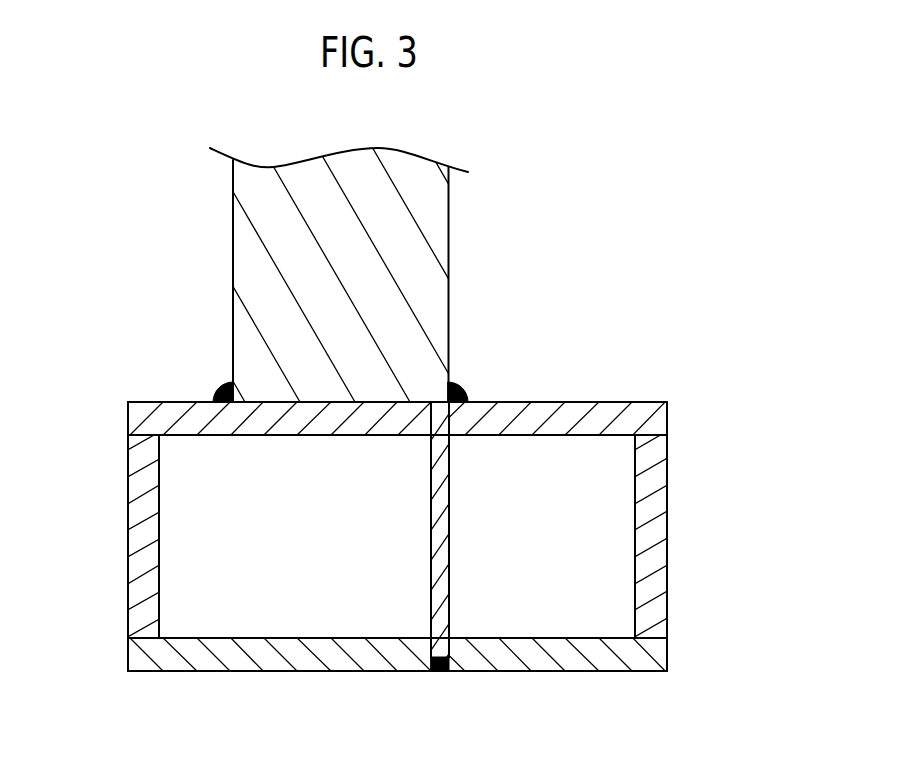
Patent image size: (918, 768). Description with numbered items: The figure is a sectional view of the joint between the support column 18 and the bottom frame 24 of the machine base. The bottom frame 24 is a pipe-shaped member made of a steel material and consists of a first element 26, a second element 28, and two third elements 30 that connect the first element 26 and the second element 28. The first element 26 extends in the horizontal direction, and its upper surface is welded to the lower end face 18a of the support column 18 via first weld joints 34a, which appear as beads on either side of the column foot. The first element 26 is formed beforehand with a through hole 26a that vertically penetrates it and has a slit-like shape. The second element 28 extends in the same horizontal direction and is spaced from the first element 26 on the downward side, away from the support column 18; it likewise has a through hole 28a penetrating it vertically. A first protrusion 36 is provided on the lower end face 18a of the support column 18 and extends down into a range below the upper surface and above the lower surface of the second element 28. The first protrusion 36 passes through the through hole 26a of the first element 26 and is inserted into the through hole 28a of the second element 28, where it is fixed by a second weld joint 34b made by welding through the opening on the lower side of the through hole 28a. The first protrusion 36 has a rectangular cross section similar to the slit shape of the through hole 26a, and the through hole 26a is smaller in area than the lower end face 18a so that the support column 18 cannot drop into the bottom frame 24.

The support column 18 is at (350, 164).
The lower end face of the support column 18a is at (309, 404).
The bottom frame 24 is at (731, 394).
The first element 26 is at (657, 422).
The through hole of the first element 26a is at (436, 406).
The second element 28 is at (656, 658).
The through hole of the second element 28a is at (431, 647).
The third element 30 is at (140, 515).
The first weld joint 34a is at (221, 388).
The second weld joint 34b is at (440, 672).
The first protrusion 36 is at (443, 528).